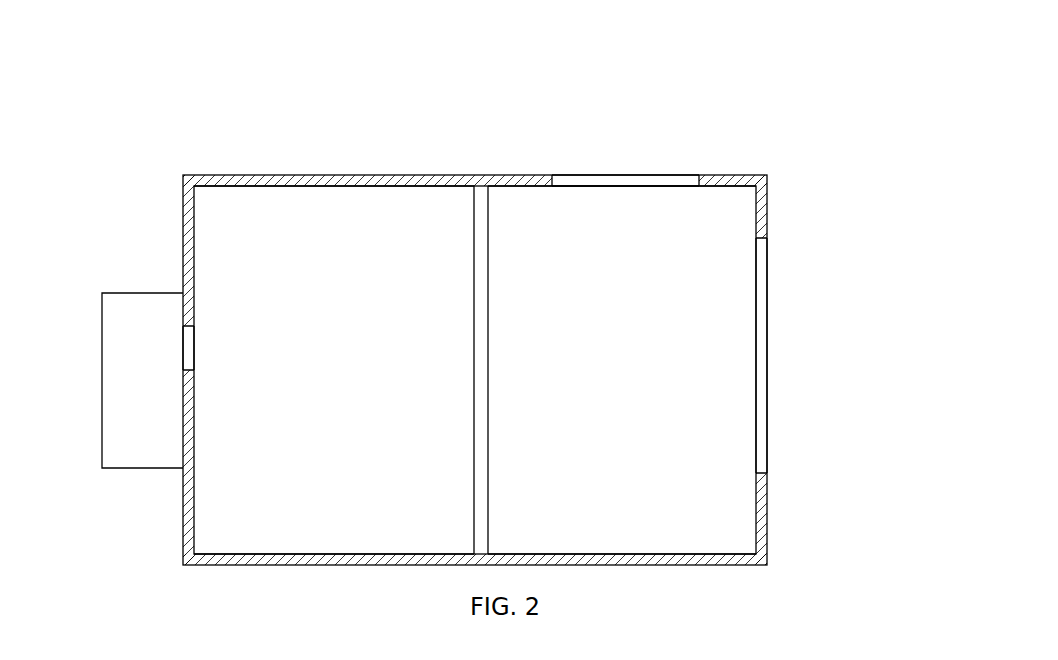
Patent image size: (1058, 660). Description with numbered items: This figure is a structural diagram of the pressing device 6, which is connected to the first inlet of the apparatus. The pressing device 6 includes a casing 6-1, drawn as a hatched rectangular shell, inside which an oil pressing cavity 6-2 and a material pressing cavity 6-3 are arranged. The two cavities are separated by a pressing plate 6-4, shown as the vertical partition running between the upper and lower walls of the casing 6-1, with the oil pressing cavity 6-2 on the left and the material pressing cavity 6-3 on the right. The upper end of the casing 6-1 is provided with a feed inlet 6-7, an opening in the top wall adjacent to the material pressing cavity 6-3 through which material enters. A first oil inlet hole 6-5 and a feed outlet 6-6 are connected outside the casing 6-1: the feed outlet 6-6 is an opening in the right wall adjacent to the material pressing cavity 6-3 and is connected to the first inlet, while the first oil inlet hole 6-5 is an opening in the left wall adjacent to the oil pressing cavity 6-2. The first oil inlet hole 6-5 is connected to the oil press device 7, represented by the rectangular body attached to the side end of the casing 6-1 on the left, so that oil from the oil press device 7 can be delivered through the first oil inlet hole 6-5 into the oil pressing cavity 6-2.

The pressing device 6 is at (232, 60).
The casing 6-1 is at (183, 225).
The oil pressing cavity 6-2 is at (350, 225).
The material pressing cavity 6-3 is at (702, 232).
The pressing plate 6-4 is at (480, 270).
The first oil inlet hole 6-5 is at (188, 342).
The feed outlet 6-6 is at (760, 277).
The feed inlet 6-7 is at (625, 176).
The oil press device 7 is at (137, 397).